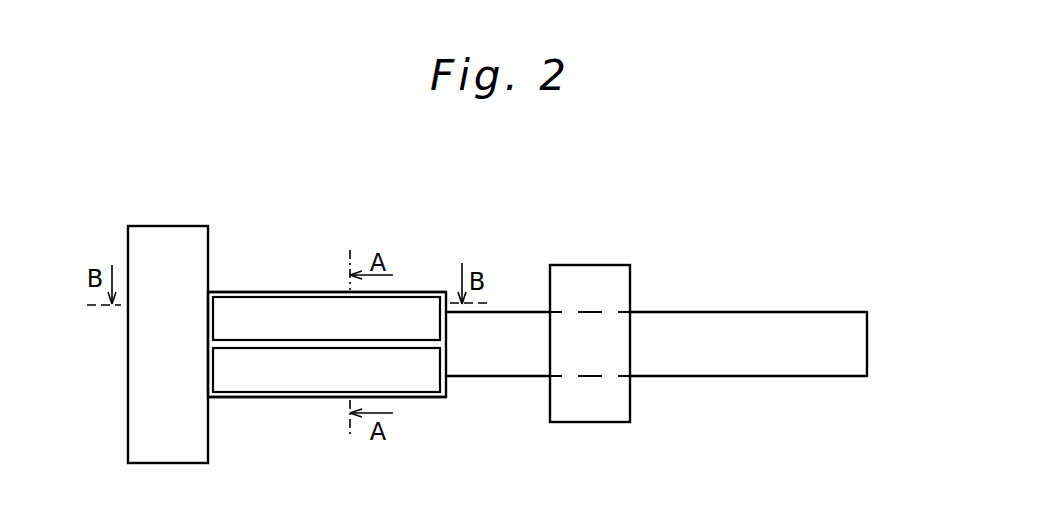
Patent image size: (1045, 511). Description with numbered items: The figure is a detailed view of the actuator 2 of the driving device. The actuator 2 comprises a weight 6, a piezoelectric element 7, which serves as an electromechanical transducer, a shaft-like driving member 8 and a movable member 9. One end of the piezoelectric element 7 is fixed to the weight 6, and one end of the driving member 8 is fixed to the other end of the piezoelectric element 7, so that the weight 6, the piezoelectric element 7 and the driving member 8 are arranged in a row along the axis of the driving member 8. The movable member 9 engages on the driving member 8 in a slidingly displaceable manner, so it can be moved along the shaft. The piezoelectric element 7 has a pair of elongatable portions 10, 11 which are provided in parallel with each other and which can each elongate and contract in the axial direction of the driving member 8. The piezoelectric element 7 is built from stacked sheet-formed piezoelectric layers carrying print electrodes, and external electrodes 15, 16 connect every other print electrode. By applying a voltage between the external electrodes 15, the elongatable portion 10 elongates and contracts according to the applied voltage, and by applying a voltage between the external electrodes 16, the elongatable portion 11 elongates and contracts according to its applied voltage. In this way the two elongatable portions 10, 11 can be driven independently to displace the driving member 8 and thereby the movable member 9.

The actuator 2 is at (495, 222).
The weight 6 is at (162, 226).
The piezoelectric element 7 is at (300, 291).
The driving member 8 is at (733, 312).
The movable member 9 is at (587, 265).
The elongatable portion 10 is at (245, 292).
The elongatable portion 11 is at (246, 398).
The external electrode 15 is at (408, 312).
The external electrode 16 is at (411, 376).